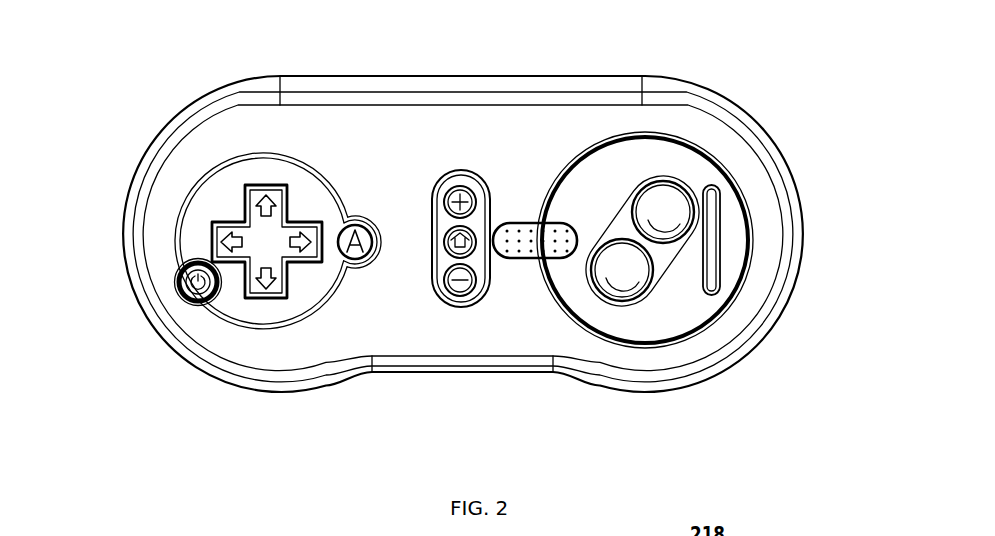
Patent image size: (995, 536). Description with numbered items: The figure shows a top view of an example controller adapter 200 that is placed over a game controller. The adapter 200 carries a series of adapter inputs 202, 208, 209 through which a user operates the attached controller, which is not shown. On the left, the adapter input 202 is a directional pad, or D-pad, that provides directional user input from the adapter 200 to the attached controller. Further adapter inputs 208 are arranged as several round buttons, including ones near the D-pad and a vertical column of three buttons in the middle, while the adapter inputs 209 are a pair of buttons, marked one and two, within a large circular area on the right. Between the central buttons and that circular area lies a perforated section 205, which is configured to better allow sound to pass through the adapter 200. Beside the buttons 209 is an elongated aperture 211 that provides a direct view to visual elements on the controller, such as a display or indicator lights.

The controller adapter 200 is at (323, 70).
The adapter input 202 is at (268, 250).
The perforated section 205 is at (541, 223).
The adapter input 208 is at (180, 285).
The adapter input 209 is at (650, 212).
The aperture 211 is at (713, 238).